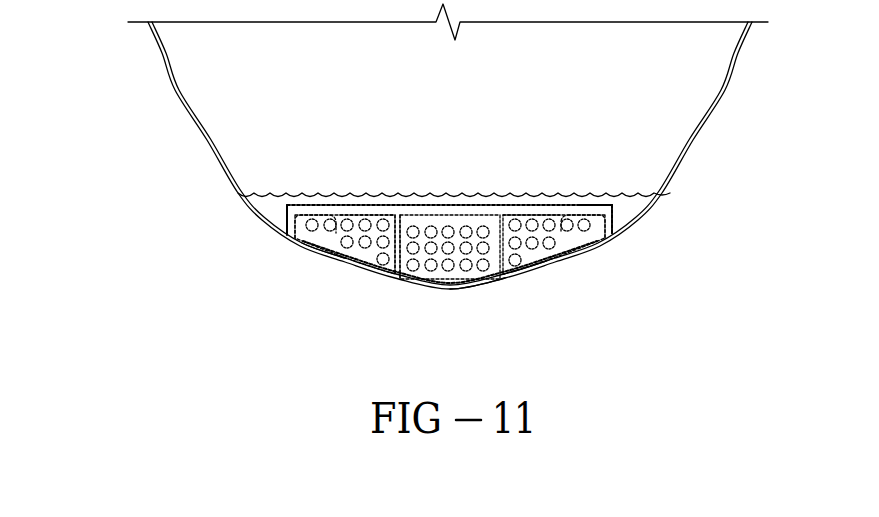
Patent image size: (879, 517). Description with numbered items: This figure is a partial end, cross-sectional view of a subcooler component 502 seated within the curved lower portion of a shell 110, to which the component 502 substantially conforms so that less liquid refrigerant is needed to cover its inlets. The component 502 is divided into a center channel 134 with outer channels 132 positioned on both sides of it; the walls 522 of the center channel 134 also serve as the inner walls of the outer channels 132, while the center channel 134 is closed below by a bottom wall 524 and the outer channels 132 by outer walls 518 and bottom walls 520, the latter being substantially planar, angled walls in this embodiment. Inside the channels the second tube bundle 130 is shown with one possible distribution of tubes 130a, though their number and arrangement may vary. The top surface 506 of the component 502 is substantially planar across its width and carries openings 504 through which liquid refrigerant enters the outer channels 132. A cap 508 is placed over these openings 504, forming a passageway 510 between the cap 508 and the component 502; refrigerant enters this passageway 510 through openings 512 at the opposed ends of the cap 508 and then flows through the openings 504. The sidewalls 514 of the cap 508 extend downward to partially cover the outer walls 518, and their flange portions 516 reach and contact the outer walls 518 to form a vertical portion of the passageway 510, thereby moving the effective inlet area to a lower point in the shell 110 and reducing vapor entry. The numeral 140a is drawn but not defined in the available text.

The shell 110 is at (172, 88).
The outer channels 132 is at (320, 261).
The bottom walls 520 is at (317, 268).
The subcooler component 502 is at (532, 271).
The center channel 134 is at (477, 288).
The cap 508 is at (290, 204).
The bottom wall 524 is at (448, 284).
The sidewalls 514 is at (288, 226).
The flange portions 516 is at (613, 226).
The frame upper right portion 140a is at (617, 204).
The openings 512 is at (296, 242).
The outer walls 518 is at (610, 237).
The second tube bundle 130 is at (362, 258).
The passageway 510 is at (376, 212).
The walls 522 is at (401, 228).
The top surface 506 is at (460, 208).
The tubes 130a is at (551, 245).
The openings 504 is at (545, 217).